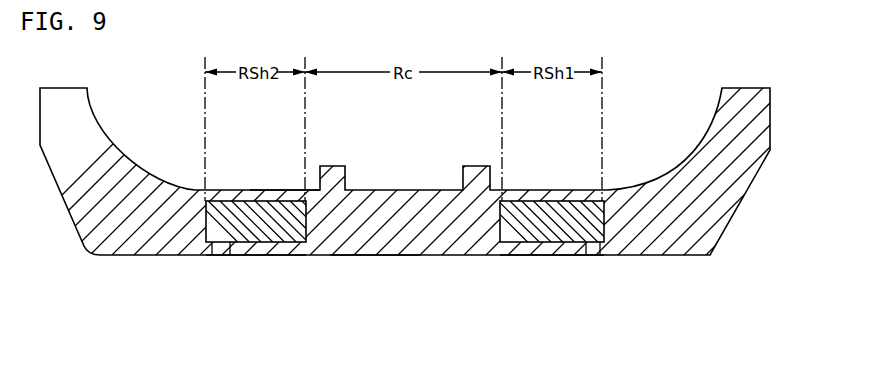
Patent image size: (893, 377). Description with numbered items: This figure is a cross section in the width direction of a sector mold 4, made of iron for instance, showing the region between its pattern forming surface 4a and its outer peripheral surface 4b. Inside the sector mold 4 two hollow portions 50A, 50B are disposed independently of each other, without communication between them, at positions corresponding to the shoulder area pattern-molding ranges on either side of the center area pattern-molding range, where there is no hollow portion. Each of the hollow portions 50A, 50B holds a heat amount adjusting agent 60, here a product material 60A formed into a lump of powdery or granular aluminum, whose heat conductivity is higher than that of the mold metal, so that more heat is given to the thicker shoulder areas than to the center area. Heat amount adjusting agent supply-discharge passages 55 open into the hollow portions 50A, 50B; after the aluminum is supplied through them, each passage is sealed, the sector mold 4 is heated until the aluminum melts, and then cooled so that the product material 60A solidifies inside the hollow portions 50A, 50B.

The sector mold 4 is at (407, 33).
The pattern forming surface 4a is at (278, 190).
The outer peripheral surface 4b is at (328, 258).
The product material 60A is at (228, 222).
The heat amount adjusting agent 60 is at (590, 227).
The heat amount adjusting agent supply-discharge passages 55 is at (221, 246).
The hollow portion 50B is at (238, 257).
The hollow portion 50A is at (520, 243).